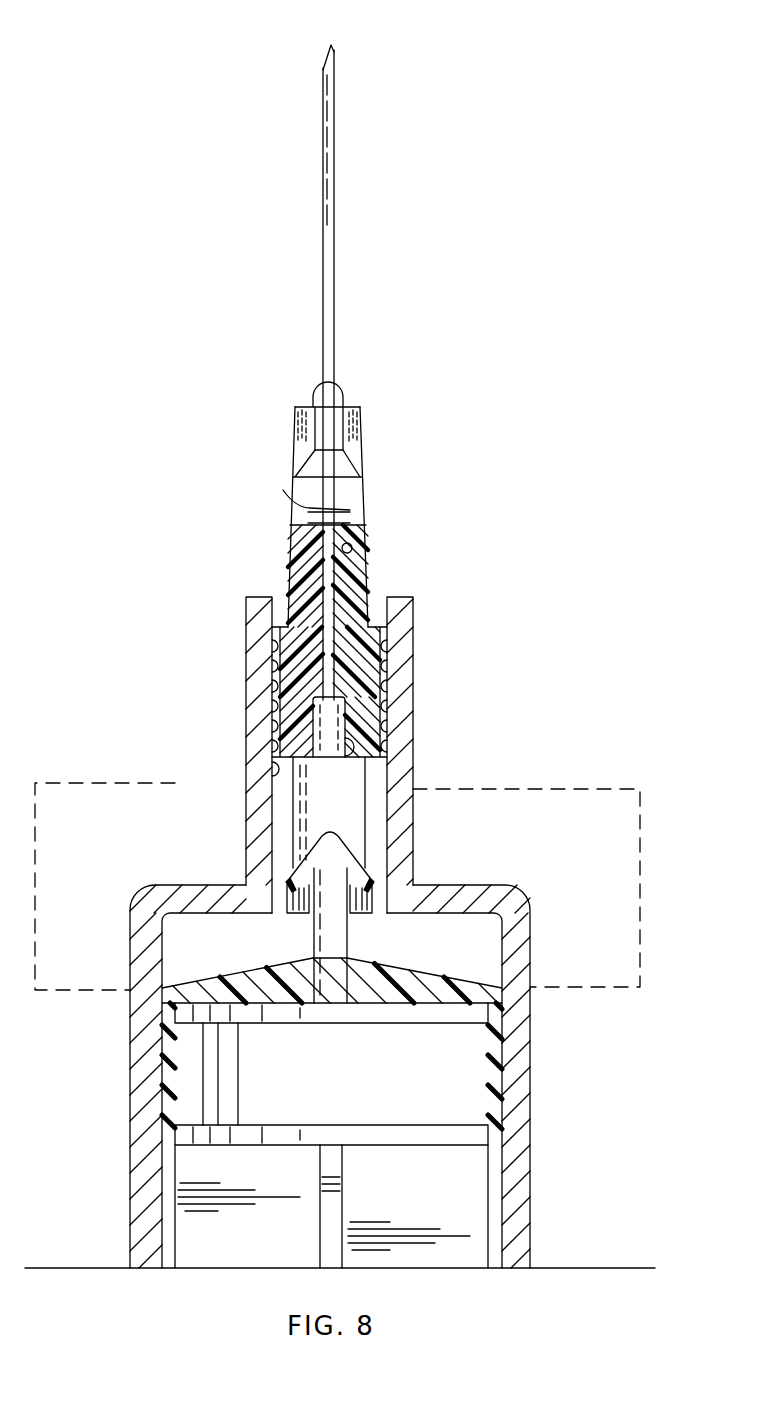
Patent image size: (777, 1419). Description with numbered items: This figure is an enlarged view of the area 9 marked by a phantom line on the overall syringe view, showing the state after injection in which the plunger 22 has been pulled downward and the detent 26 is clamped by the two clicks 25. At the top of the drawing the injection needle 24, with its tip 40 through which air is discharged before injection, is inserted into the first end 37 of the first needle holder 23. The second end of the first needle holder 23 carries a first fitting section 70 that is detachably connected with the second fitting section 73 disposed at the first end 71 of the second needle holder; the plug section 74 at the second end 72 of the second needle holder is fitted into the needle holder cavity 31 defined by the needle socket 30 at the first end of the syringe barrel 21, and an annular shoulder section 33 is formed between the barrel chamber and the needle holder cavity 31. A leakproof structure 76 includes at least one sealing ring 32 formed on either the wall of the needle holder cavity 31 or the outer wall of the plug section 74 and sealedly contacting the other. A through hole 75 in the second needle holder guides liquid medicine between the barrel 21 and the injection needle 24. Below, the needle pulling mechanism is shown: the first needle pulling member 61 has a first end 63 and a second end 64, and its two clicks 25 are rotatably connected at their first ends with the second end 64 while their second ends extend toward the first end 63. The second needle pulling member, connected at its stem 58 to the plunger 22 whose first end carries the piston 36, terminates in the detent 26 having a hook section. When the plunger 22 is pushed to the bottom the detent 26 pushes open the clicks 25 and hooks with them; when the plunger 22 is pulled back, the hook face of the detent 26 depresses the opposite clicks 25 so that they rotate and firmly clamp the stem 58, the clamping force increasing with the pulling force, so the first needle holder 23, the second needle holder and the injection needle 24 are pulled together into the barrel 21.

The area of FIG. 8 (phantom-line region) 9 is at (588, 789).
The syringe barrel 21 is at (524, 1080).
The plunger 22 is at (472, 1206).
The first needle holder 23 is at (365, 481).
The injection needle 24 is at (335, 250).
The click 25 is at (296, 880).
The detent 26 is at (336, 836).
The needle socket 30 is at (246, 649).
The needle holder cavity 31 is at (388, 694).
The sealing ring 32 is at (386, 657).
The annular shoulder section 33 is at (216, 912).
The piston 36 is at (478, 988).
The first end of the first needle holder 37 is at (349, 404).
The tip of the injection needle 40 is at (330, 46).
The stem 58 is at (340, 936).
The first needle pulling member 61 is at (366, 818).
The first end of the first needle pulling member 63 is at (356, 742).
The second end of the first needle pulling member 64 is at (289, 906).
The first fitting section 70 is at (353, 545).
The first end of the second needle holder 71 is at (313, 520).
The second end of the second needle holder 72 is at (275, 769).
The second fitting section 73 is at (370, 580).
The plug section 74 is at (292, 680).
The through hole 75 is at (354, 748).
The leakproof structure 76 is at (494, 633).